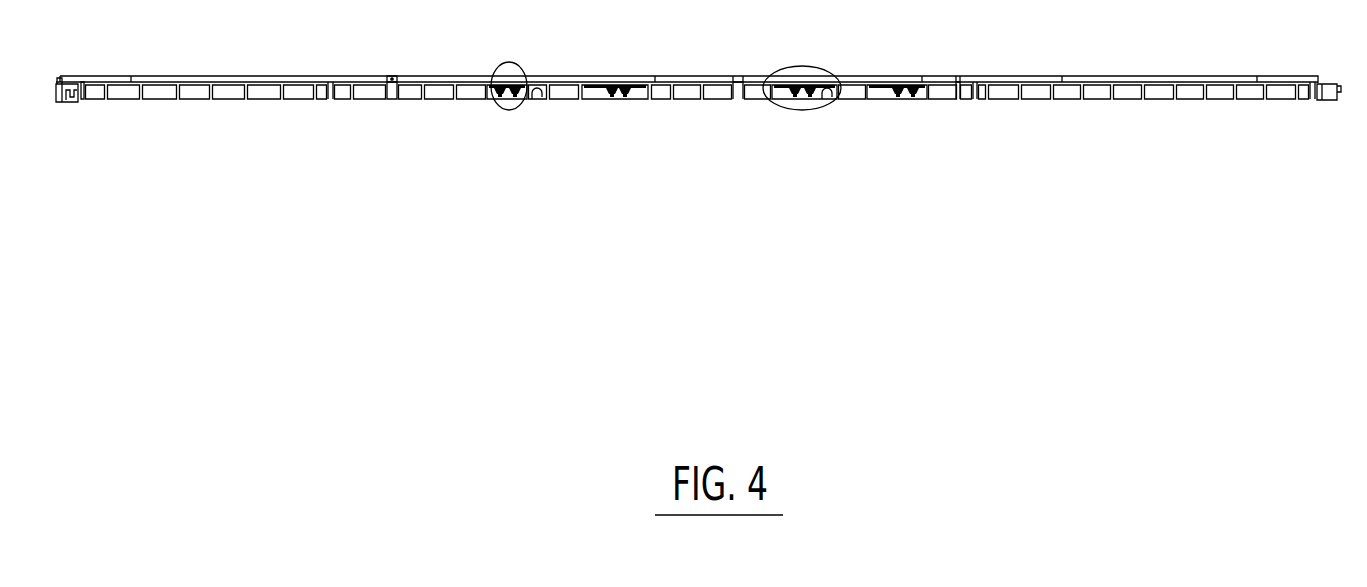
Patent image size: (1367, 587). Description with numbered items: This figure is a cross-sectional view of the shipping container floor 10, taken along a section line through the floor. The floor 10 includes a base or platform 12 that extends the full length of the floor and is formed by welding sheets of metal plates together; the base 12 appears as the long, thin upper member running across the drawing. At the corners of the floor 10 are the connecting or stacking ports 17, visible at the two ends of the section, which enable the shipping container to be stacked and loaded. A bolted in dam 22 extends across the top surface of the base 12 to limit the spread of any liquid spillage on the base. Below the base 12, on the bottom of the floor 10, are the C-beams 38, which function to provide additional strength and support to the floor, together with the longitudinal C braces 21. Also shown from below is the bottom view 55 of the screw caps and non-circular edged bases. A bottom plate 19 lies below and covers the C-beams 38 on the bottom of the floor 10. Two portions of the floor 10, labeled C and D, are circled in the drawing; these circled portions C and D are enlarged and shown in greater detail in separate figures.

The floor 10 is at (685, 175).
The base 12 is at (181, 77).
The connecting ports 17 is at (59, 103).
The bottom plate 19 is at (1066, 103).
The longitudinal C braces 21 is at (537, 100).
The bolted in dams 22 is at (392, 75).
The C-beams 38 is at (144, 103).
The bottom view of screw caps and non-circular edged bases 55 is at (616, 103).
The circled portion C is at (814, 69).
The circled portion D is at (520, 64).